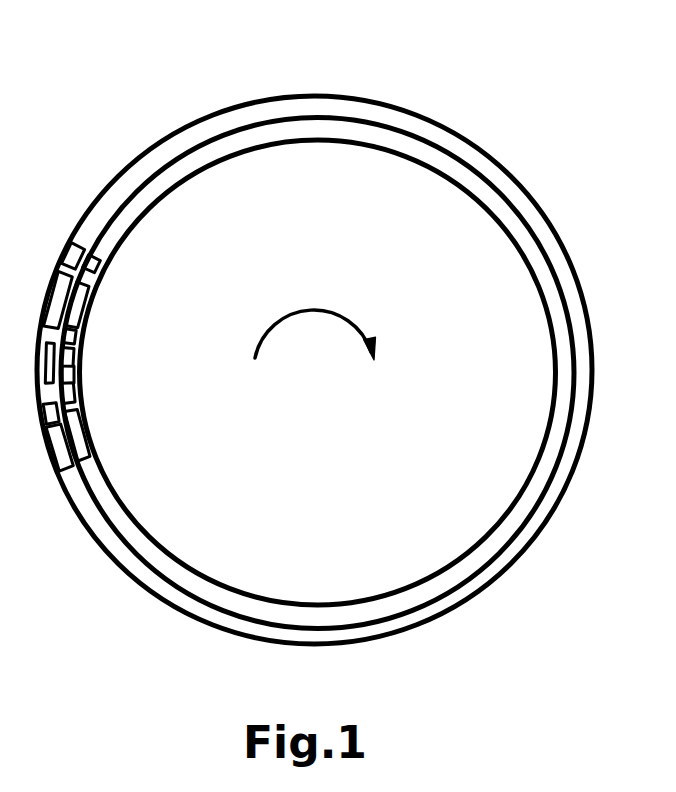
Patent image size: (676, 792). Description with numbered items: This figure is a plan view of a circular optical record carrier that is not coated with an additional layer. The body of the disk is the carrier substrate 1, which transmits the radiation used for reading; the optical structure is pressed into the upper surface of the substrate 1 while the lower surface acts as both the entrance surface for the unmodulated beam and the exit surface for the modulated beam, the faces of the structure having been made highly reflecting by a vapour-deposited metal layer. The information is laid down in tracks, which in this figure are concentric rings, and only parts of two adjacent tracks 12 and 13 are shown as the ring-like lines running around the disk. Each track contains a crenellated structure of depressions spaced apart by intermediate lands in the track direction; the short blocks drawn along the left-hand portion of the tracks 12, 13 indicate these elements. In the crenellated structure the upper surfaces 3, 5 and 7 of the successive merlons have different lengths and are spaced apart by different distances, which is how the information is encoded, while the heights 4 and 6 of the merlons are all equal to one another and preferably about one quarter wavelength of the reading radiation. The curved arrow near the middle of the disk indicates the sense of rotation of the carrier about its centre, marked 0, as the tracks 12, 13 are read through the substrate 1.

The carrier substrate 1 is at (425, 187).
The track 12 is at (137, 197).
The track 13 is at (118, 186).
The upper surface of merlon 7 is at (80, 318).
The height of merlon 6 is at (65, 337).
The upper surface of merlon 5 is at (65, 355).
The height of merlon 4 is at (63, 372).
The upper surface of merlon 3 is at (67, 393).
The axis of rotation 0 is at (317, 370).